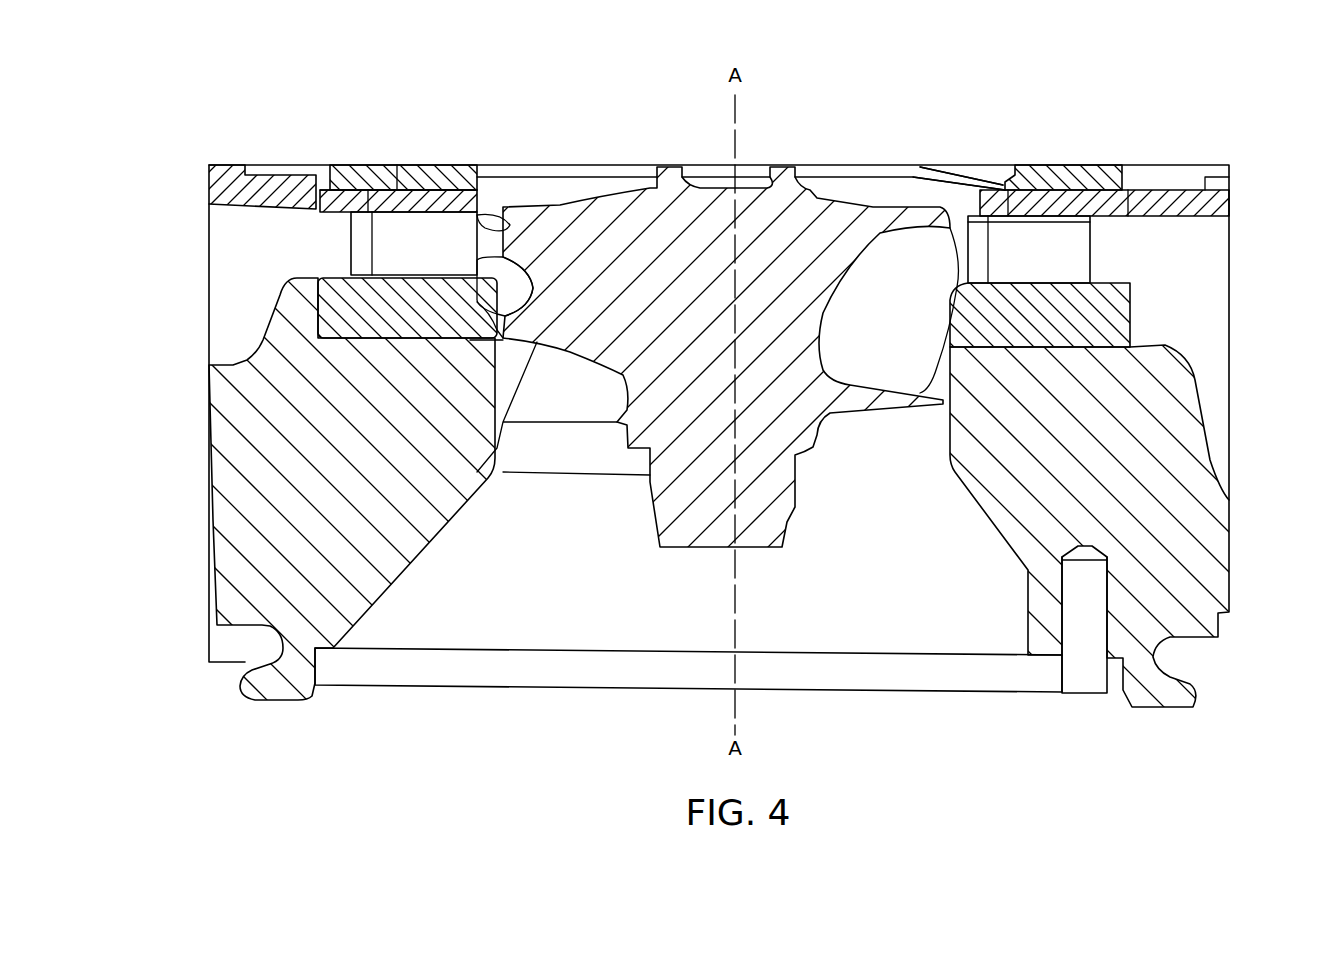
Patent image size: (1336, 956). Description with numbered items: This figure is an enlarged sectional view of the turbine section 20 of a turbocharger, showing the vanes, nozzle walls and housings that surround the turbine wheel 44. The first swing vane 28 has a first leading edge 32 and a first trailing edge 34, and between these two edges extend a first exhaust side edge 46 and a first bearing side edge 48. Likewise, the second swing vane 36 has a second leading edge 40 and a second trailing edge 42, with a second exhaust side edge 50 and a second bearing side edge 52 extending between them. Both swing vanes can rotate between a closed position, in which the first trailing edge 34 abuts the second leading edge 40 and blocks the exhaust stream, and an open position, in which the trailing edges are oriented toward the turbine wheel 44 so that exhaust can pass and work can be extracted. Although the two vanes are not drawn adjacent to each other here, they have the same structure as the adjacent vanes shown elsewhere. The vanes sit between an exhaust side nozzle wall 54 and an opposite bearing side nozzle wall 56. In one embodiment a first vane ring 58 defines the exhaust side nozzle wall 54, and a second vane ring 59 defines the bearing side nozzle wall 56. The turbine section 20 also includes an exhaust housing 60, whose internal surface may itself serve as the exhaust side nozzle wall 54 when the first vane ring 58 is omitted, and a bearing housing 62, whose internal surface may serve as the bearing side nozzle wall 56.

The turbine section 20 is at (201, 612).
The first swing vane 28 is at (1150, 252).
The first leading edge 32 is at (1093, 253).
The first trailing edge 34 is at (946, 225).
The second swing vane 36 is at (486, 228).
The second leading edge 40 is at (352, 245).
The second trailing edge 42 is at (490, 240).
The turbine wheel 44 is at (793, 225).
The first exhaust side edge 46 is at (1057, 280).
The first bearing side edge 48 is at (1007, 190).
The second exhaust side edge 50 is at (413, 270).
The second bearing side edge 52 is at (395, 185).
The exhaust side nozzle wall 54 is at (370, 182).
The bearing side nozzle wall 56 is at (453, 190).
The first vane ring 58 is at (323, 310).
The second vane ring 59 is at (408, 195).
The exhaust housing 60 is at (253, 427).
The bearing housing 62 is at (353, 182).